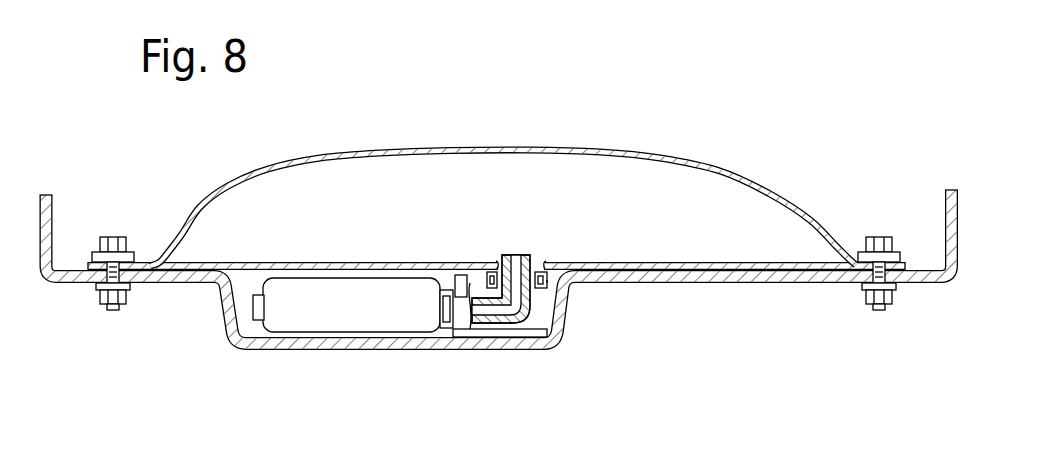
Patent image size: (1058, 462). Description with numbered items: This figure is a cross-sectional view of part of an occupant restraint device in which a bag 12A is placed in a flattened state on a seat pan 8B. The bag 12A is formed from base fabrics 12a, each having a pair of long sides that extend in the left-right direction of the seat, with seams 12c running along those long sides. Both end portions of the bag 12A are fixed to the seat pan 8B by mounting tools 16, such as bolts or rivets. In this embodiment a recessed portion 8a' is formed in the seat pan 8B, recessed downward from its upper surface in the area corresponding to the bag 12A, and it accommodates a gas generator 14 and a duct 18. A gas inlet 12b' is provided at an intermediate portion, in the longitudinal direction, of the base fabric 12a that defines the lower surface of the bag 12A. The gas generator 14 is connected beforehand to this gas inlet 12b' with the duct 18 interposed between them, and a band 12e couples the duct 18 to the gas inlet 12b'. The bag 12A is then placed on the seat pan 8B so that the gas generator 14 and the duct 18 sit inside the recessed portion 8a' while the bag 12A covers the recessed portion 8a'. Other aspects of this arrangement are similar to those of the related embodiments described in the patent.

The seat pan 8B is at (803, 283).
The recessed portion 8a' is at (394, 349).
The bag 12A is at (677, 145).
The base fabric 12a is at (547, 153).
The seam 12c is at (153, 260).
The band 12e is at (499, 258).
The gas inlet 12b' is at (588, 302).
The gas generator 14 is at (308, 322).
The mounting tool 16 is at (111, 237).
The duct 18 is at (473, 330).